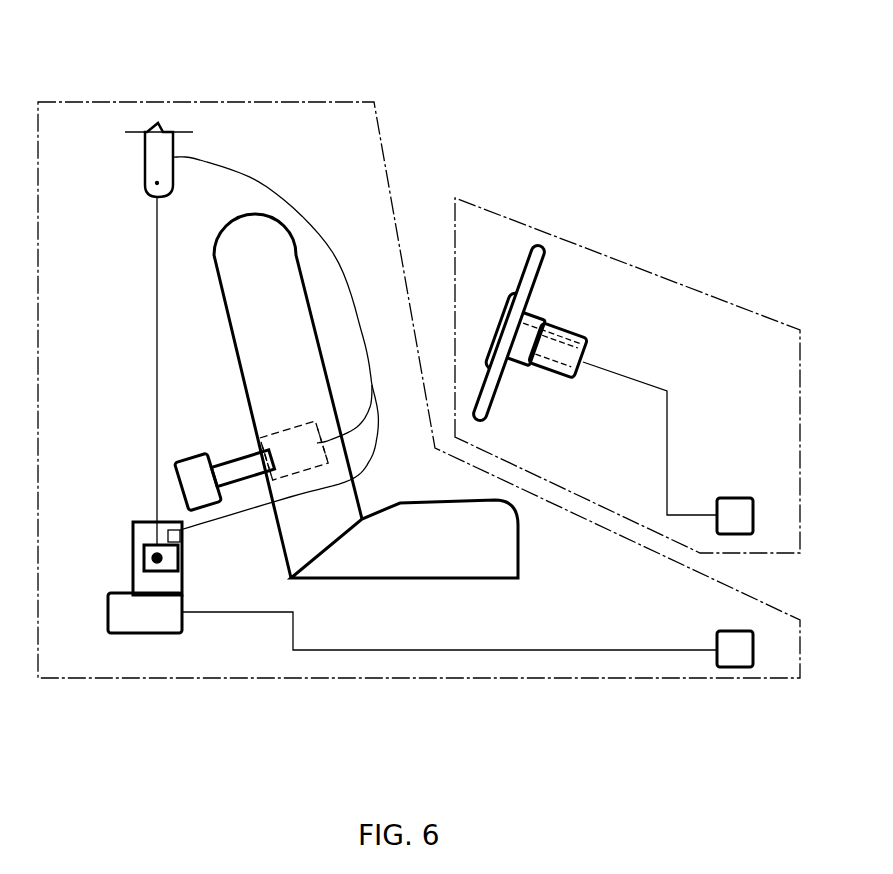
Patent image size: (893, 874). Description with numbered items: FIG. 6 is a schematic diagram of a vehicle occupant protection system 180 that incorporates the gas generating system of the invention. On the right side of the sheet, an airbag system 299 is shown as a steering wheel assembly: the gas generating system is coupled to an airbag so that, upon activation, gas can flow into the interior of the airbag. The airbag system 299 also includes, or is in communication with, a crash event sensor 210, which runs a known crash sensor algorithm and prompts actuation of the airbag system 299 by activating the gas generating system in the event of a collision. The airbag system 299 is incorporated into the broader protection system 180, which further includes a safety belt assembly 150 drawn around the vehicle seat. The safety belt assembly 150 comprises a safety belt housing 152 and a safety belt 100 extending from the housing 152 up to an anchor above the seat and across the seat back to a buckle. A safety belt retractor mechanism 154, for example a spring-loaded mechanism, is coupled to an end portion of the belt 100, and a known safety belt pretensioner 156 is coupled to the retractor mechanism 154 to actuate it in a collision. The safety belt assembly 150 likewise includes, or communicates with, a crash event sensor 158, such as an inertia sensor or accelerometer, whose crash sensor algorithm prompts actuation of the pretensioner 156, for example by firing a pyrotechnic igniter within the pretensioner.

The vehicle occupant protection system 180 is at (152, 32).
The safety belt 100 is at (288, 202).
The safety belt assembly 150 is at (343, 680).
The safety belt housing 152 is at (143, 562).
The safety belt retractor mechanism 154 is at (138, 522).
The safety belt pretensioner 156 is at (145, 635).
The crash event sensor 158 is at (718, 631).
The crash event sensor 210 is at (733, 512).
The airbag system 299 is at (617, 258).